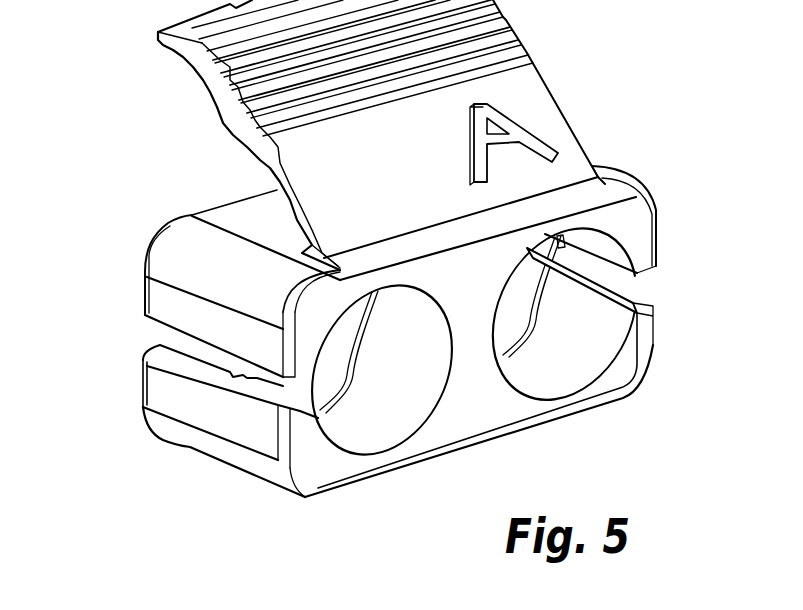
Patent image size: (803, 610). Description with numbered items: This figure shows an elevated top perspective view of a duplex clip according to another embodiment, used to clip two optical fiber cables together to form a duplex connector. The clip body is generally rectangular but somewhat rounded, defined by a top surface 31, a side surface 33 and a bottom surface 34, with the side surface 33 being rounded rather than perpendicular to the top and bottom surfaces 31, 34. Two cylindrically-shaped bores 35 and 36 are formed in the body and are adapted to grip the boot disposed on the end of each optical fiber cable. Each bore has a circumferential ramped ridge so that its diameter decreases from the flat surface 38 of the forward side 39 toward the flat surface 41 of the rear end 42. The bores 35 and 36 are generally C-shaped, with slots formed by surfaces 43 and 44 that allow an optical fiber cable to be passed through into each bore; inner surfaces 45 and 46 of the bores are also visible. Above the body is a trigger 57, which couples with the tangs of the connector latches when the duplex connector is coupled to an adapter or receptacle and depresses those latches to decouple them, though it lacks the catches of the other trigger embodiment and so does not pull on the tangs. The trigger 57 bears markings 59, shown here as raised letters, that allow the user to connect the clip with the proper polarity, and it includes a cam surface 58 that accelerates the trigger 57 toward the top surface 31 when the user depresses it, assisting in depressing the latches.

The top surface 31 is at (223, 212).
The side surface 33 is at (210, 415).
The bottom surface 34 is at (515, 437).
The cylindrically-shaped bore 35 is at (380, 423).
The cylindrically-shaped bore 36 is at (573, 373).
The flat surface 38 is at (157, 237).
The forward side 39 is at (145, 295).
The flat surface 41 is at (542, 408).
The rear end 42 is at (653, 208).
The slot surface 43 is at (170, 363).
The slot surface 44 is at (640, 270).
The inner surface of first bore 45 is at (373, 353).
The inner surface of second bore 46 is at (542, 330).
The trigger 57 is at (533, 100).
The cam surface 58 is at (220, 107).
The markings 59 is at (470, 150).